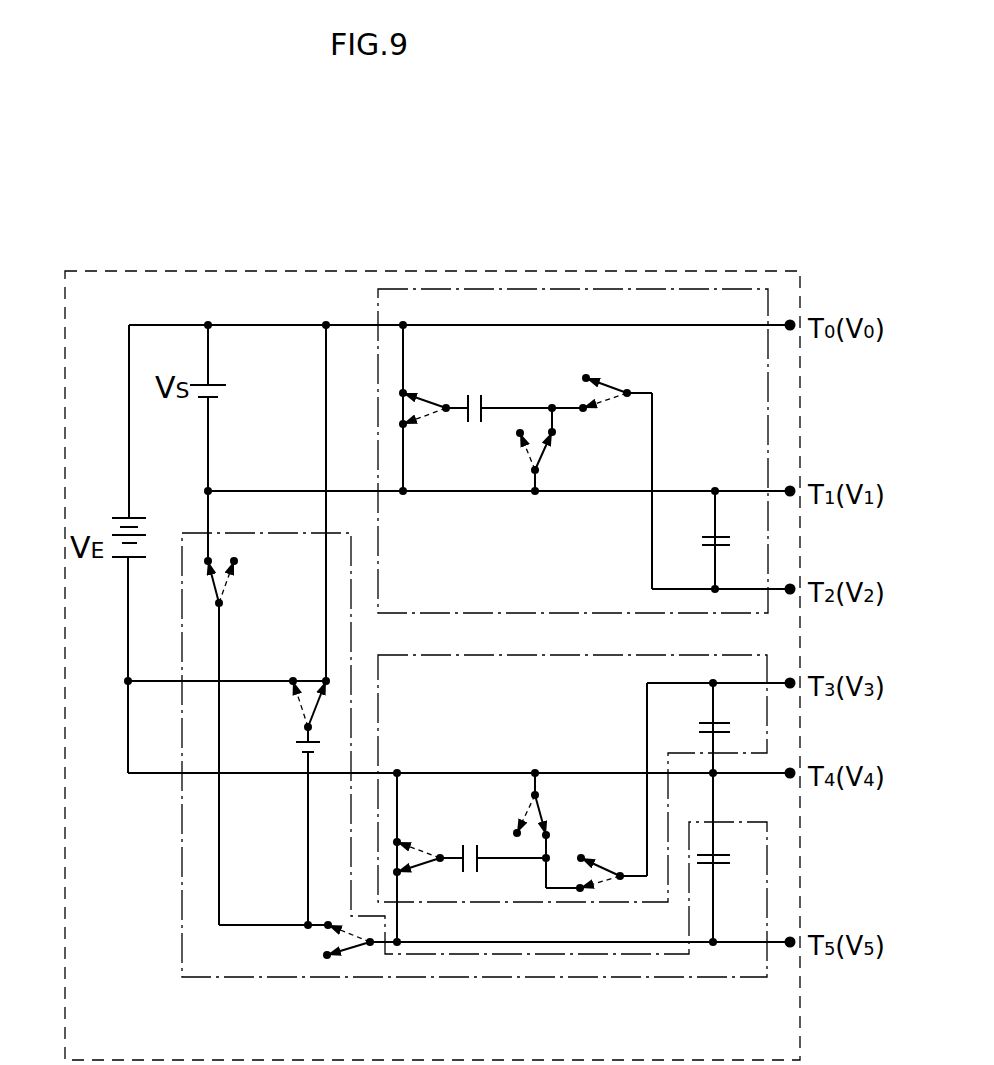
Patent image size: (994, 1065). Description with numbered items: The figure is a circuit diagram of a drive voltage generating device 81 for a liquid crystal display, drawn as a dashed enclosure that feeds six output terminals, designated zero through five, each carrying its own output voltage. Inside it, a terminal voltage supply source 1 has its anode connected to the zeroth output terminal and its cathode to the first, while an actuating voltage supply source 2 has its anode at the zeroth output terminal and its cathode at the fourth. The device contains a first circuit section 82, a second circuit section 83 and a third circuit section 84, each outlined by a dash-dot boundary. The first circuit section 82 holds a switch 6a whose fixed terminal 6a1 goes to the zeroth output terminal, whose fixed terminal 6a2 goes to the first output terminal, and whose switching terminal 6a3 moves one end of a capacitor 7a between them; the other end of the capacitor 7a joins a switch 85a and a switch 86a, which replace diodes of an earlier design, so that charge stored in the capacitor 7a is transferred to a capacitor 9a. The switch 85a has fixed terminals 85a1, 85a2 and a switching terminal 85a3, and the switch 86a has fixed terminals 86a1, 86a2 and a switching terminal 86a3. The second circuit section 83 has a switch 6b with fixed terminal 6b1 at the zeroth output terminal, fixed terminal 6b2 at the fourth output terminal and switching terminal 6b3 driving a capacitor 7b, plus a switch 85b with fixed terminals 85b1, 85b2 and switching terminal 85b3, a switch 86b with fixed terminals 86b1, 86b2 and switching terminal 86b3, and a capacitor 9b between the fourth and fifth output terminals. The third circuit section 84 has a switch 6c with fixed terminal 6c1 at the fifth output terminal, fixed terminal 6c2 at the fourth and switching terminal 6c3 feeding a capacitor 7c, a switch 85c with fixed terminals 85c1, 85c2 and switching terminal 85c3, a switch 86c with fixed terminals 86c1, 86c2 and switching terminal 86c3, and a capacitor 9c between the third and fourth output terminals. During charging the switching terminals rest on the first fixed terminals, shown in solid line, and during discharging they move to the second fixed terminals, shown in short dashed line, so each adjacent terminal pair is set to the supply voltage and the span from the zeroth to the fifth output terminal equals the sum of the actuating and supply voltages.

The terminal voltage supply source 1 is at (222, 392).
The actuating voltage supply source 2 is at (150, 548).
The switch 6a is at (395, 426).
The fixed terminal 6a1 is at (403, 393).
The fixed terminal 6a2 is at (404, 426).
The switching terminal 6a3 is at (446, 405).
The capacitor 7a is at (476, 394).
The switch 85a is at (540, 472).
The fixed terminal 85a1 is at (553, 432).
The fixed terminal 85a2 is at (520, 432).
The switching terminal 85a3 is at (533, 472).
The switch 86a is at (627, 392).
The fixed terminal 86a1 is at (584, 378).
The fixed terminal 86a2 is at (583, 412).
The switching terminal 86a3 is at (640, 392).
The capacitor 9a is at (731, 540).
The drive voltage generating device 81 is at (532, 268).
The first circuit section 82 is at (714, 290).
The second circuit section 83 is at (182, 858).
The third circuit section 84 is at (747, 651).
The switch 85b is at (222, 604).
The fixed terminal 85b1 is at (211, 558).
The fixed terminal 85b2 is at (236, 565).
The switching terminal 85b3 is at (222, 608).
The switch 6b is at (325, 712).
The fixed terminal 6b1 is at (330, 678).
The fixed terminal 6b2 is at (292, 684).
The switching terminal 6b3 is at (307, 728).
The capacitor 7b is at (300, 752).
The switch 86b is at (372, 952).
The fixed terminal 86b1 is at (327, 958).
The fixed terminal 86b2 is at (327, 928).
The switching terminal 86b3 is at (372, 950).
The capacitor 9b is at (733, 857).
The switch 6c is at (410, 858).
The fixed terminal 6c1 is at (397, 872).
The fixed terminal 6c2 is at (397, 842).
The switching terminal 6c3 is at (440, 862).
The capacitor 7c is at (470, 874).
The switch 85c is at (538, 806).
The fixed terminal 85c1 is at (548, 832).
The fixed terminal 85c2 is at (516, 830).
The switching terminal 85c3 is at (533, 796).
The switch 86c is at (603, 865).
The fixed terminal 86c1 is at (580, 862).
The fixed terminal 86c2 is at (581, 892).
The switching terminal 86c3 is at (622, 880).
The capacitor 9c is at (731, 727).